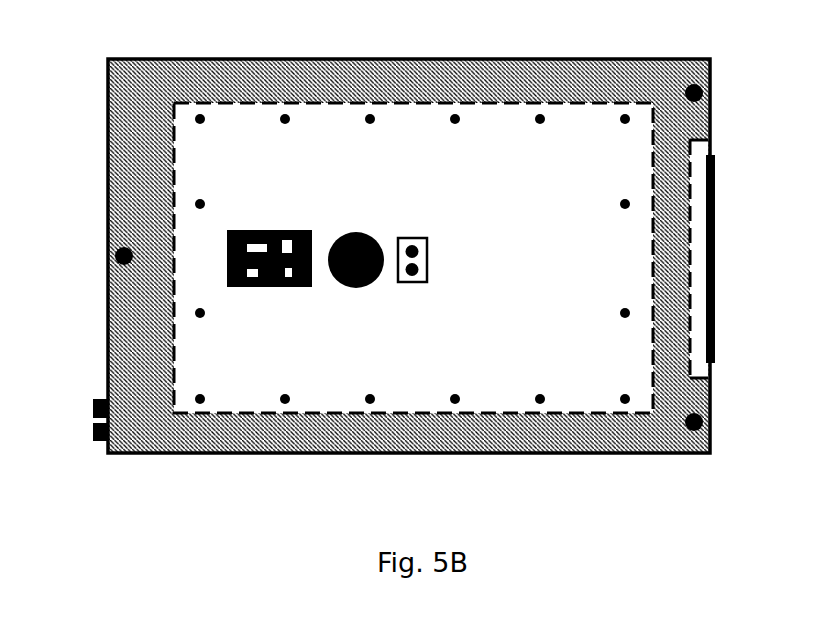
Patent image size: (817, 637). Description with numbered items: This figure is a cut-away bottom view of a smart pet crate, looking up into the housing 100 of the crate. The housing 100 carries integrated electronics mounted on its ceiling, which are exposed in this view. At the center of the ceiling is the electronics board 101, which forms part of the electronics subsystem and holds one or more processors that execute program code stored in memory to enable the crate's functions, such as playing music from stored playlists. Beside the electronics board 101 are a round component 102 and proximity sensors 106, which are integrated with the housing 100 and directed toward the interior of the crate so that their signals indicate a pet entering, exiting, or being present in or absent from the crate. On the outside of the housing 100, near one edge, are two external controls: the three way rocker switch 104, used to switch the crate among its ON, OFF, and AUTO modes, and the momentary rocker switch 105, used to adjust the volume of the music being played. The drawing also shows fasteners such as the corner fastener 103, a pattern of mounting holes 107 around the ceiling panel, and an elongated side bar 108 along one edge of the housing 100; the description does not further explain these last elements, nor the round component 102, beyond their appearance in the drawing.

The housing 100 is at (293, 48).
The electronics board 101 is at (277, 226).
The circular component 102 is at (377, 232).
The corner fastener / screw 103 is at (694, 435).
The three way rocker switch 104 is at (93, 400).
The momentary rocker switch 105 is at (93, 432).
The proximity sensors 106 is at (436, 262).
The mounting hole 107 is at (612, 125).
The side bar / connector strip 108 is at (718, 252).